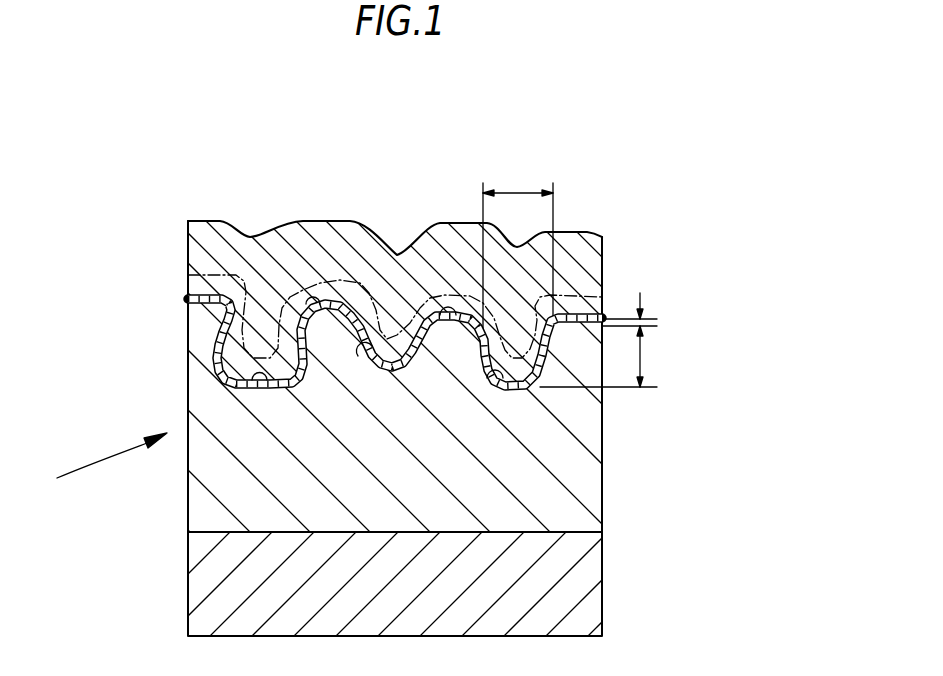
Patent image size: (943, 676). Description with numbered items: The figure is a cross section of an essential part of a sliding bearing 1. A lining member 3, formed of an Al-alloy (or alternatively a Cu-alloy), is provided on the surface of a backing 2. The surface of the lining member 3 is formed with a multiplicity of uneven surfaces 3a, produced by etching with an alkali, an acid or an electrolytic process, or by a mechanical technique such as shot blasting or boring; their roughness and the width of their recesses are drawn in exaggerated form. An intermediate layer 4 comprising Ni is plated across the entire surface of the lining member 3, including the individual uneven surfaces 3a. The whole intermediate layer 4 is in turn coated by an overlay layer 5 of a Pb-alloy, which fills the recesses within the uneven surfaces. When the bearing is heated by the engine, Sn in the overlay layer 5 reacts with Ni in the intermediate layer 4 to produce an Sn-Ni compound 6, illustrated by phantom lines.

The sliding bearing 1 is at (45, 515).
The backing 2 is at (583, 603).
The lining member 3 is at (578, 486).
The uneven surface 3a is at (250, 368).
The intermediate layer 4 is at (580, 303).
The overlay layer 5 is at (623, 152).
The Sn-Ni compound 6 is at (222, 275).